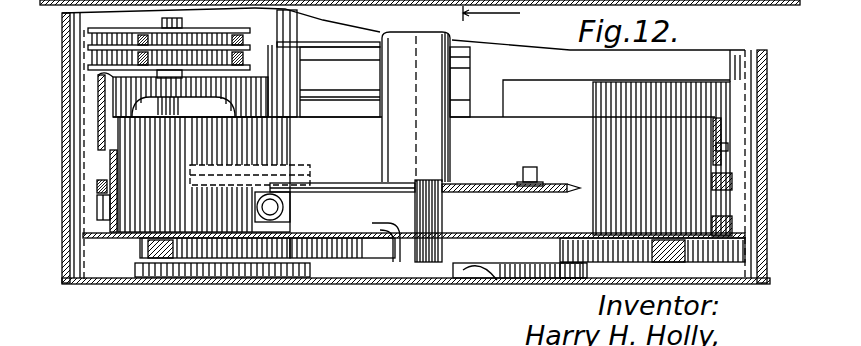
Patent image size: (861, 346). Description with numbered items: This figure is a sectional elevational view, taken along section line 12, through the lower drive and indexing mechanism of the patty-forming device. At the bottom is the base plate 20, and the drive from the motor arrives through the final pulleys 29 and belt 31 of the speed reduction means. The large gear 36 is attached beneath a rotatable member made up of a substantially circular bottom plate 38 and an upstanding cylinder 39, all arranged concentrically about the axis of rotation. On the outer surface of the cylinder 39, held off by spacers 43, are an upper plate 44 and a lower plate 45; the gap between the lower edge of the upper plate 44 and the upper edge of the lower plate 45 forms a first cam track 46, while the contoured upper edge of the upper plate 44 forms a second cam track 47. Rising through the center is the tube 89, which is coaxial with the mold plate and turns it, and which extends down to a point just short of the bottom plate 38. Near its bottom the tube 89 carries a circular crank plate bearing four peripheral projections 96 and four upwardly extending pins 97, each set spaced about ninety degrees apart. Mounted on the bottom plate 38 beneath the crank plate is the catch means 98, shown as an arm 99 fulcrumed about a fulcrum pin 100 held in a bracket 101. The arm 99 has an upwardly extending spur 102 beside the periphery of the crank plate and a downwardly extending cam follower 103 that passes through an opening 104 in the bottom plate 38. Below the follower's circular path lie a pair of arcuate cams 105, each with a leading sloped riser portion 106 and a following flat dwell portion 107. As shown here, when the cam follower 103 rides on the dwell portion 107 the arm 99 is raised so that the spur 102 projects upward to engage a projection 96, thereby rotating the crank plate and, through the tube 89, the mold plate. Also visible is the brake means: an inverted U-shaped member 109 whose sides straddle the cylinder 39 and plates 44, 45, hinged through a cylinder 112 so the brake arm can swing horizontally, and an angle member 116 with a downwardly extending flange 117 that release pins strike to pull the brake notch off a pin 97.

The section line 12 is at (491, 15).
The base plate 20 is at (70, 283).
The pulleys 29 is at (88, 66).
The belt 31 is at (236, 50).
The large gear 36 is at (687, 256).
The bottom plate 38 is at (87, 238).
The cylinder 39 is at (483, 125).
The spacers 43 is at (100, 205).
The upper plate 44 is at (557, 100).
The lower plate 45 is at (100, 216).
The first cam track 46 is at (100, 152).
The second cam track 47 is at (230, 77).
The tube 89 is at (423, 78).
The peripheral projections 96 is at (403, 183).
The pins 97 is at (310, 140).
The catch means 98 is at (443, 202).
The arm 99 is at (333, 210).
The fulcrum pin 100 is at (258, 207).
The bracket 101 is at (262, 228).
The spur 102 is at (410, 180).
The cam follower 103 is at (403, 230).
The opening 104 is at (428, 263).
The arcuate cams 105 is at (336, 262).
The riser portion 106 is at (453, 263).
The dwell portion 107 is at (322, 250).
The inverted U-shaped member 109 is at (303, 120).
The cylinder 112 is at (303, 73).
The angle member 116 is at (197, 190).
The flange 117 is at (215, 165).